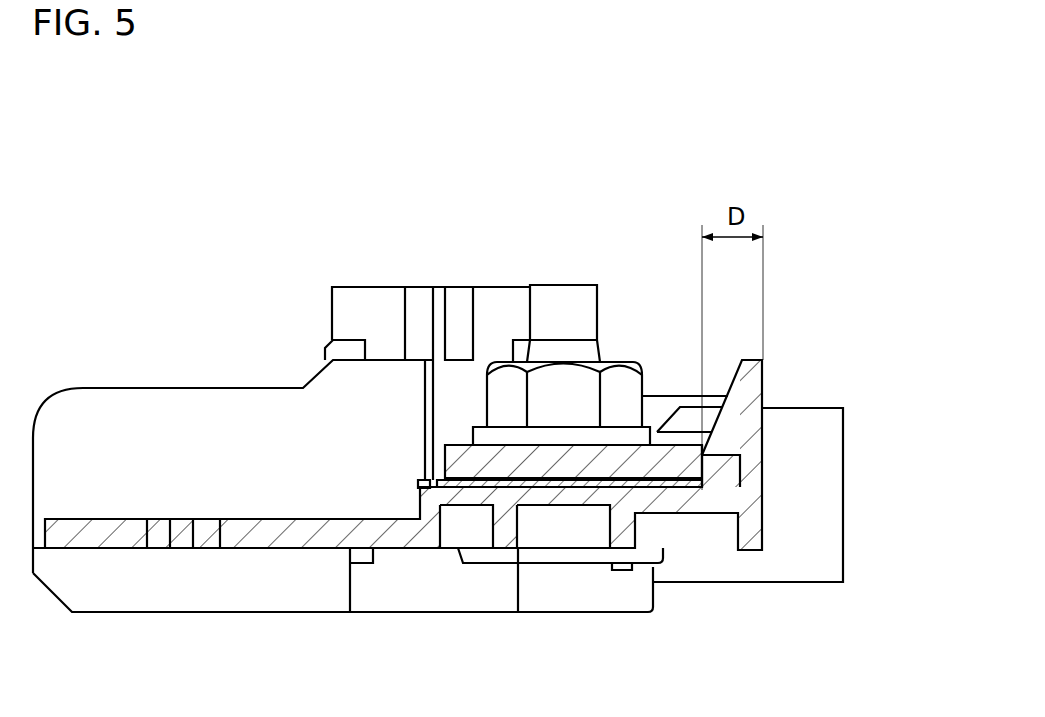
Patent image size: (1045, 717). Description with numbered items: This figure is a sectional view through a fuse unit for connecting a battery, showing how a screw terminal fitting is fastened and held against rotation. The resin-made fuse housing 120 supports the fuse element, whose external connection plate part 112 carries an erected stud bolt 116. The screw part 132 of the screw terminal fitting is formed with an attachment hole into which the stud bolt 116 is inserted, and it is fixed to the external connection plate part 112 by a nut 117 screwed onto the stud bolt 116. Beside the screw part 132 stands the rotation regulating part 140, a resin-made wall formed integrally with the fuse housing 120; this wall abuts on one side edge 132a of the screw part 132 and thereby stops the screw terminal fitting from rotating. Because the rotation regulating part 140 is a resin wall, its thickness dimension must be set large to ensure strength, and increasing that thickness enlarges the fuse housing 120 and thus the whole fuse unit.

The fuse housing 120 is at (148, 388).
The external connection plate part 112 is at (549, 481).
The stud bolt 116 is at (552, 285).
The nut 117 is at (622, 387).
The screw part 132 is at (470, 458).
The one side edge 132a is at (717, 473).
The rotation regulating part 140 is at (763, 380).